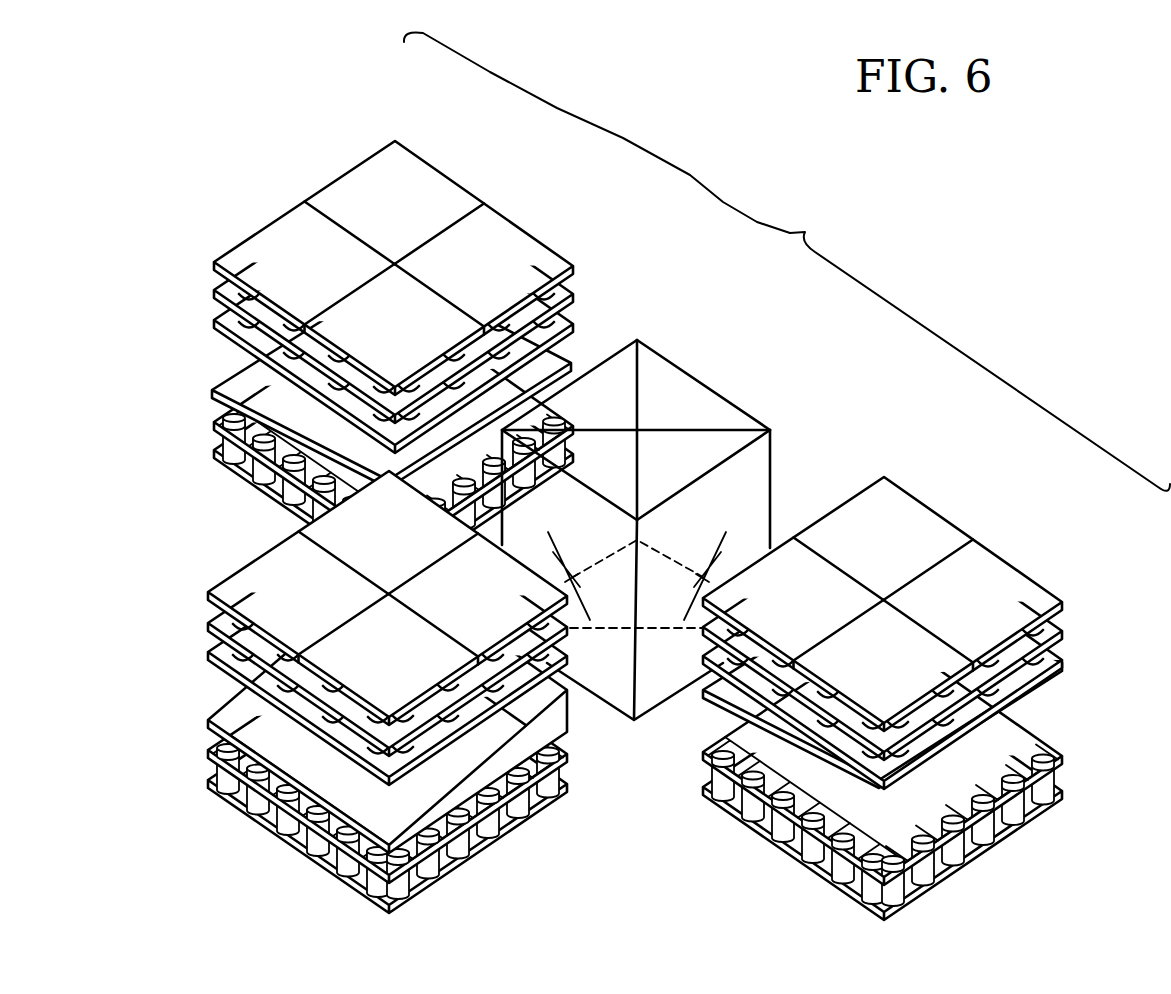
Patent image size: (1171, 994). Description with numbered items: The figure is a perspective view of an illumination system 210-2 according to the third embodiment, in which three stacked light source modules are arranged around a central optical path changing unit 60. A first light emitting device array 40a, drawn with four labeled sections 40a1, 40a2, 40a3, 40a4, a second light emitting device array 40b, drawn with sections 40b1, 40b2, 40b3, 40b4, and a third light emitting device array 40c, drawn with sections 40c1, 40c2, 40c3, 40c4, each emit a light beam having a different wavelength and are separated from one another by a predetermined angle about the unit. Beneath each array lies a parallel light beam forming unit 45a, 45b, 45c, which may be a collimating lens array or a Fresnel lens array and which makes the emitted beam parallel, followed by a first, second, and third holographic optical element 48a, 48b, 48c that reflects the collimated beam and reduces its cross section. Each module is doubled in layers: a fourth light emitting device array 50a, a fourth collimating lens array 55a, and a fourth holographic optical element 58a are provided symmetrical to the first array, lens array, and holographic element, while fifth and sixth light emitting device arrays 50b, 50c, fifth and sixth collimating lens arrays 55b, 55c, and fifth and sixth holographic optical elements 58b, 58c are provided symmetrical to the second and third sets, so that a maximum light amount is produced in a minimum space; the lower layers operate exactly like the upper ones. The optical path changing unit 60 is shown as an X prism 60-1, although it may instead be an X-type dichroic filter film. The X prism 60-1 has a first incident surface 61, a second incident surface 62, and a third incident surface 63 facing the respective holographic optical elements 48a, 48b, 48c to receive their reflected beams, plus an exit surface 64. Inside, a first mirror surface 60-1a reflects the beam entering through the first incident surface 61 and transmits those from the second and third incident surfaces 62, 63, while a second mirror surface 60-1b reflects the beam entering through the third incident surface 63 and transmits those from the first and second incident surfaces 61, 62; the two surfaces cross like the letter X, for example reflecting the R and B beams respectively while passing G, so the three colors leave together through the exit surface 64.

The illumination system 210-2 is at (787, 261).
The first light emitting device array 40a is at (393, 268).
The sub panel 40a1 is at (336, 244).
The sub panel 40a2 is at (425, 230).
The sub panel 40a3 is at (362, 294).
The sub panel 40a4 is at (448, 290).
The first parallel light beam forming unit 45a is at (214, 290).
The first holographic optical element 48a is at (214, 320).
The fourth holographic optical element 58a is at (220, 388).
The fourth collimating lens array 55a is at (212, 423).
The fourth light emitting device array 50a is at (212, 452).
The second light emitting device array 40b is at (387, 598).
The sub panel 40b1 is at (329, 576).
The sub panel 40b2 is at (418, 564).
The sub panel 40b3 is at (355, 626).
The sub panel 40b4 is at (443, 624).
The second parallel light beam forming unit 45b is at (210, 622).
The second holographic optical element 48b is at (212, 650).
The fifth holographic optical element 58b is at (222, 718).
The fifth collimating lens array 55b is at (208, 751).
The fifth light emitting device array 50b is at (206, 781).
The third light emitting device array 40c is at (882, 591).
The sub panel 40c1 is at (829, 578).
The sub panel 40c2 is at (917, 565).
The sub panel 40c3 is at (854, 631).
The sub panel 40c4 is at (941, 625).
The third parallel light beam forming unit 45c is at (1064, 628).
The third holographic optical element 48c is at (1064, 660).
The sixth holographic optical element 58c is at (1062, 722).
The sixth collimating lens array 55c is at (1063, 758).
The sixth light emitting device array 50c is at (1063, 793).
The optical path changing unit 60 is at (700, 510).
The X prism 60-1 is at (770, 430).
The first mirror surface 60-1a is at (700, 430).
The second mirror surface 60-1b is at (658, 380).
The first incident surface 61 is at (612, 398).
The second incident surface 62 is at (616, 663).
The third incident surface 63 is at (760, 500).
The exit surface 64 is at (687, 402).